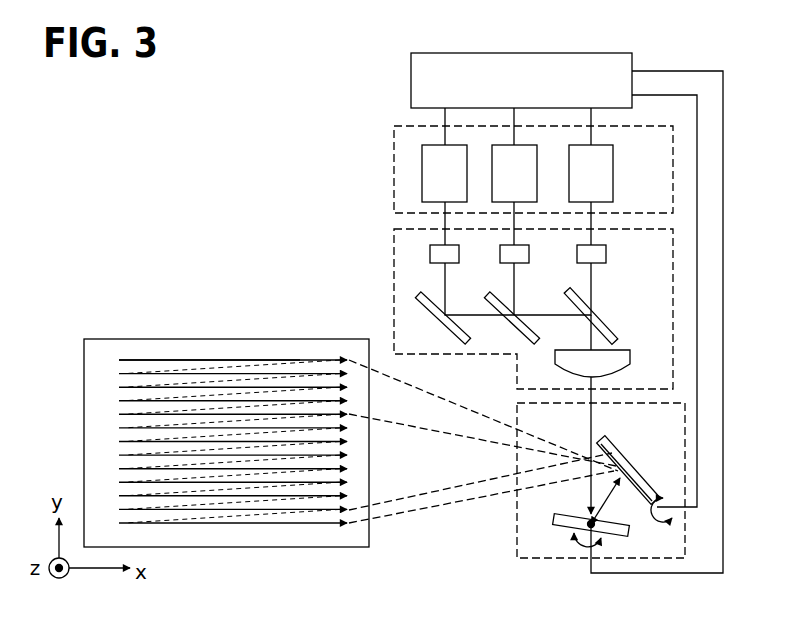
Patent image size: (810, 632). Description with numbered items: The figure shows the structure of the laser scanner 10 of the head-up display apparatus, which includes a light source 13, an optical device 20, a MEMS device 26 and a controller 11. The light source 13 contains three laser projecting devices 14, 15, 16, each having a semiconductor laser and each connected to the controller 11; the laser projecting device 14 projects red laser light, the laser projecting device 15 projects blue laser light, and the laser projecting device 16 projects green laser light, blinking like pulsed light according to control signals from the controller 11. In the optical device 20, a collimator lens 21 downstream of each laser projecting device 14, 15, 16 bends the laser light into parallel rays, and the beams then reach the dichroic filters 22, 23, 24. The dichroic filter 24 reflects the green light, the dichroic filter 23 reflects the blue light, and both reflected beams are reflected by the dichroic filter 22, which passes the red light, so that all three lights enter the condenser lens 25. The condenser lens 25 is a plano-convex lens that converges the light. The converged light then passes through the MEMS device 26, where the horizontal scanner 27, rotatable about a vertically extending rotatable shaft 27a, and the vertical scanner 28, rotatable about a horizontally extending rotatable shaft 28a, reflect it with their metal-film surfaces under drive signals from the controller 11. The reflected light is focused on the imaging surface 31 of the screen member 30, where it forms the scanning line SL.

The laser scanner 10 is at (346, 60).
The controller 11 is at (600, 53).
The light source 13 is at (394, 138).
The laser projecting device 14 is at (613, 172).
The laser projecting device 15 is at (537, 172).
The laser projecting device 16 is at (467, 172).
The optical device 20 is at (394, 252).
The collimator lens 21 is at (459, 253).
The dichroic filter 22 is at (610, 327).
The dichroic filter 23 is at (530, 326).
The dichroic filter 24 is at (460, 326).
The condenser lens 25 is at (630, 360).
The MEMS device 26 is at (686, 557).
The horizontal scanner 27 is at (553, 517).
The rotatable shaft 27a is at (591, 528).
The vertical scanner 28 is at (618, 452).
The rotatable shaft 28a is at (604, 441).
The screen member 30 is at (235, 338).
The imaging surface 31 is at (101, 441).
The scanning line SL is at (172, 358).